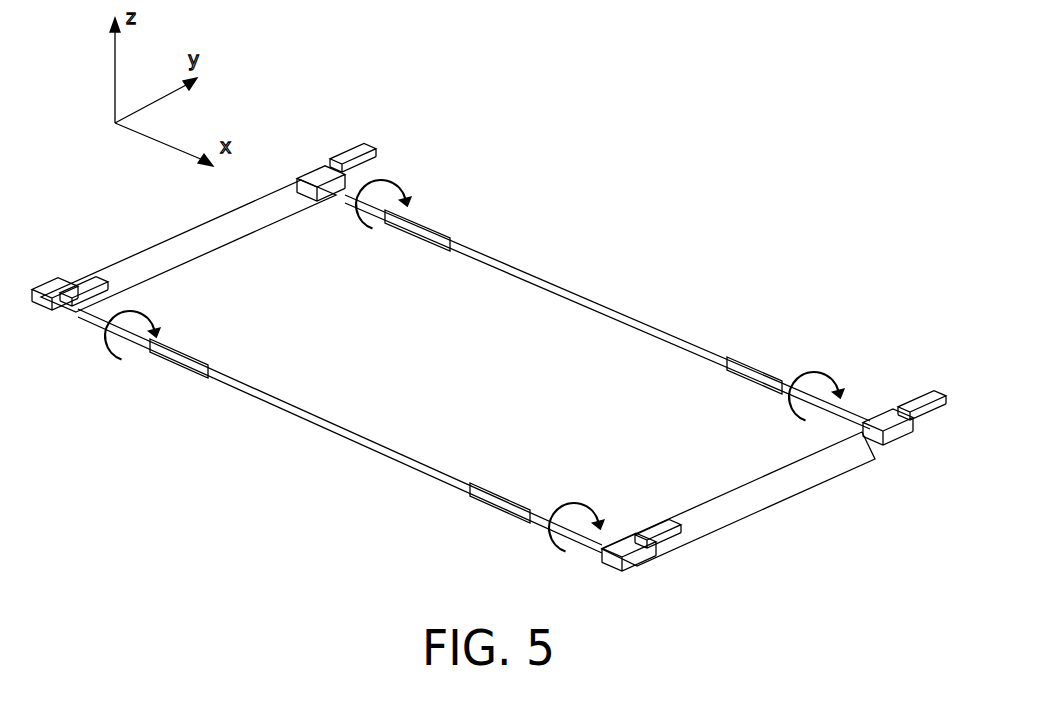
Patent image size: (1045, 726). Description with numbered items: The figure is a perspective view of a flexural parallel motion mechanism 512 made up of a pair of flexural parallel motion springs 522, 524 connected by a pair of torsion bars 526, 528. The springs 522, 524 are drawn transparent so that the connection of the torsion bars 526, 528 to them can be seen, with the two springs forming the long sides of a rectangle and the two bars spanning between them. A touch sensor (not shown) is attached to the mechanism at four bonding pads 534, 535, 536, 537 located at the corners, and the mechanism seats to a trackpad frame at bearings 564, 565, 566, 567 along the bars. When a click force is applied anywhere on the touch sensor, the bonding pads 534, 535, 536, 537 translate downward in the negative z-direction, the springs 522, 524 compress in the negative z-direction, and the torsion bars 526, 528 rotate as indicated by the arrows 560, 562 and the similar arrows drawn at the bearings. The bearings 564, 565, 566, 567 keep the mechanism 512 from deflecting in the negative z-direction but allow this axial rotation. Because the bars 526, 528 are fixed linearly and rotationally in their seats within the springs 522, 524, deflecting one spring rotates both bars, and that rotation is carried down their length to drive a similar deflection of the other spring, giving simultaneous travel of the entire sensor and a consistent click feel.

The flexural parallel motion mechanism 512 is at (575, 181).
The flexural parallel motion spring 522 is at (235, 222).
The flexural parallel motion spring 524 is at (770, 490).
The torsion bar 526 is at (585, 299).
The torsion bar 528 is at (342, 435).
The bonding pad 534 is at (655, 524).
The bonding pad 535 is at (86, 272).
The bonding pad 536 is at (916, 394).
The bonding pad 537 is at (356, 150).
The arrow 560 is at (572, 512).
The arrow 562 is at (815, 376).
The bearing 564 is at (500, 513).
The bearing 565 is at (188, 364).
The bearing 566 is at (745, 372).
The bearing 567 is at (432, 226).